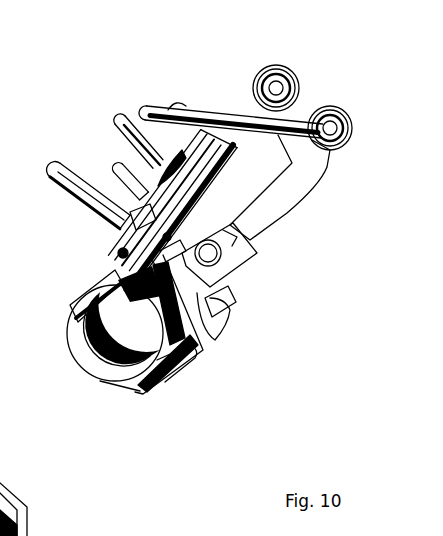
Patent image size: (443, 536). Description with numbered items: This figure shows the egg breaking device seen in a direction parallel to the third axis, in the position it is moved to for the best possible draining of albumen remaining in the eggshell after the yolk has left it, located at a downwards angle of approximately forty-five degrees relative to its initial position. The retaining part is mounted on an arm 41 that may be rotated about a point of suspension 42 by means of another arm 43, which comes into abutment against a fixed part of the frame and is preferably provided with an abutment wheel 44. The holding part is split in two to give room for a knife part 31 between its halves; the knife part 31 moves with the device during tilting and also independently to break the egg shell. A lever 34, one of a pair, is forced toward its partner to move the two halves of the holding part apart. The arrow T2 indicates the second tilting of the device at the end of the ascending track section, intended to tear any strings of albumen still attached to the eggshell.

The knife part 31 is at (203, 342).
The lever 34 is at (82, 172).
The arm 41 is at (165, 190).
The point of suspension 42 is at (172, 106).
The arm 43 is at (296, 116).
The abutment wheel 44 is at (352, 125).
The arrow indicating tilting T2 is at (50, 362).